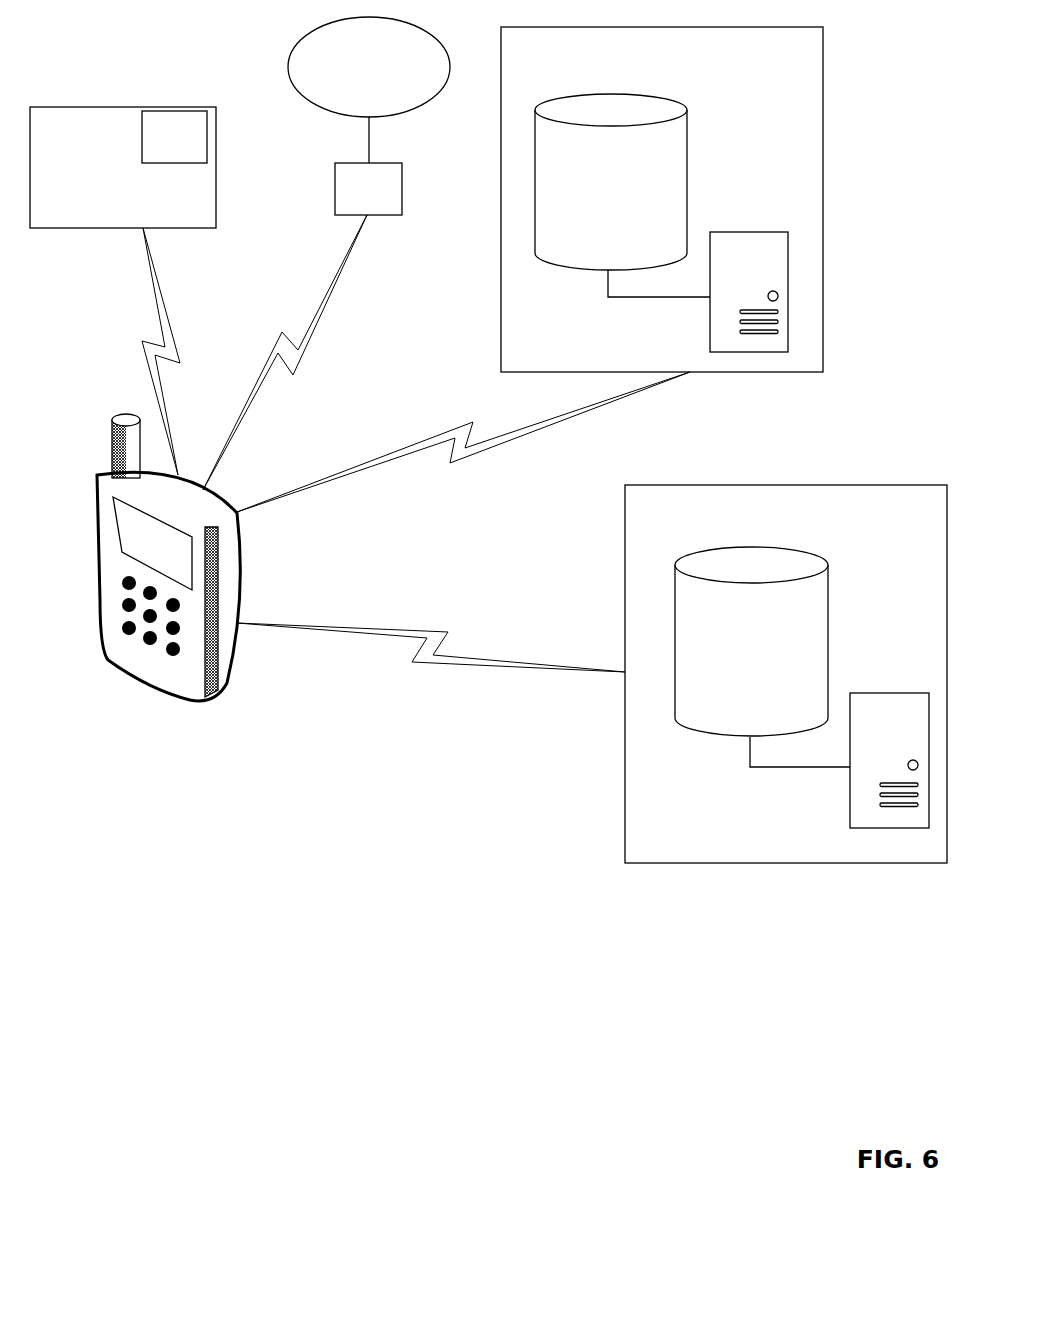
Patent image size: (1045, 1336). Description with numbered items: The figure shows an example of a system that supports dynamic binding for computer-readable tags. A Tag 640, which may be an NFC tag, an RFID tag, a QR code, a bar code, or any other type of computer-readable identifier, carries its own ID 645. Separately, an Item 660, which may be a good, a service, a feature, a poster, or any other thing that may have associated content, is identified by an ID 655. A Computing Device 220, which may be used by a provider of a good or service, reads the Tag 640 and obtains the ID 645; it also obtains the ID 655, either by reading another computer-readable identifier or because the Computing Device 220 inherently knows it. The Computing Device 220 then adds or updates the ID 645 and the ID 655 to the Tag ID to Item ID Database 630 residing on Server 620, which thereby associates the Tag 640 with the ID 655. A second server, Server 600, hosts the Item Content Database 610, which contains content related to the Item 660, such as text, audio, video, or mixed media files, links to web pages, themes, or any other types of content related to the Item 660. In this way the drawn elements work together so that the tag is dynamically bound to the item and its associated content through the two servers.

The computing device 220 is at (209, 708).
The server 600 is at (530, 269).
The item content database 610 is at (611, 182).
The server 620 is at (592, 674).
The tag ID to item ID database 630 is at (751, 641).
The tag 640 is at (123, 291).
The ID 645 is at (174, 137).
The ID 655 is at (302, 326).
The item 660 is at (369, 90).